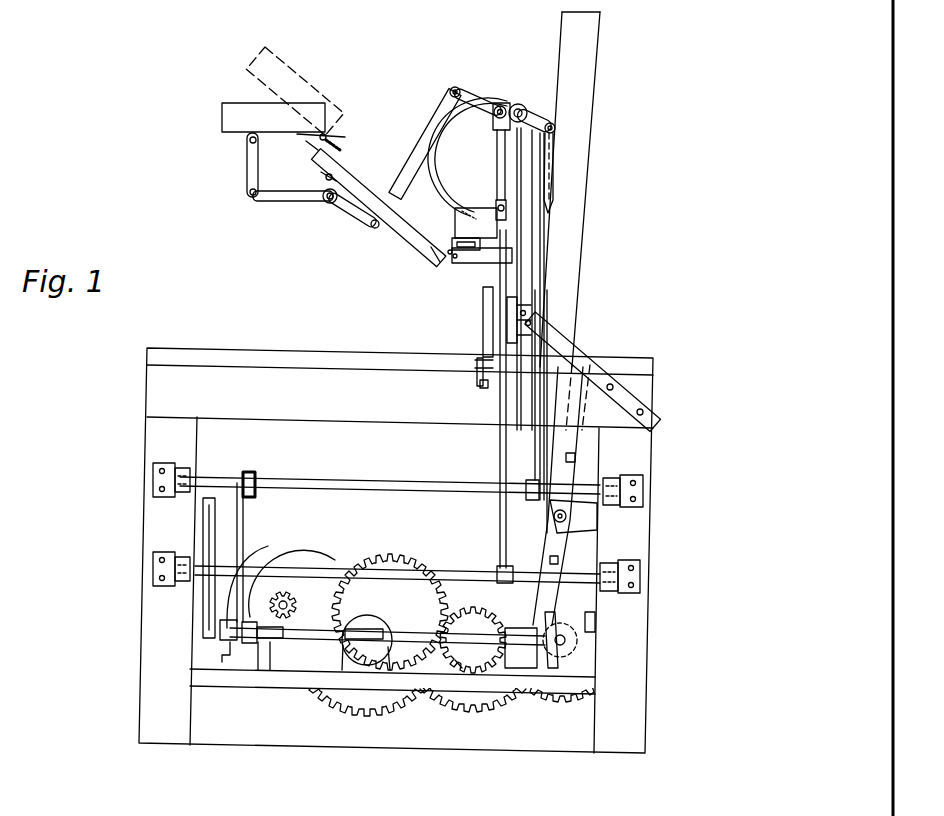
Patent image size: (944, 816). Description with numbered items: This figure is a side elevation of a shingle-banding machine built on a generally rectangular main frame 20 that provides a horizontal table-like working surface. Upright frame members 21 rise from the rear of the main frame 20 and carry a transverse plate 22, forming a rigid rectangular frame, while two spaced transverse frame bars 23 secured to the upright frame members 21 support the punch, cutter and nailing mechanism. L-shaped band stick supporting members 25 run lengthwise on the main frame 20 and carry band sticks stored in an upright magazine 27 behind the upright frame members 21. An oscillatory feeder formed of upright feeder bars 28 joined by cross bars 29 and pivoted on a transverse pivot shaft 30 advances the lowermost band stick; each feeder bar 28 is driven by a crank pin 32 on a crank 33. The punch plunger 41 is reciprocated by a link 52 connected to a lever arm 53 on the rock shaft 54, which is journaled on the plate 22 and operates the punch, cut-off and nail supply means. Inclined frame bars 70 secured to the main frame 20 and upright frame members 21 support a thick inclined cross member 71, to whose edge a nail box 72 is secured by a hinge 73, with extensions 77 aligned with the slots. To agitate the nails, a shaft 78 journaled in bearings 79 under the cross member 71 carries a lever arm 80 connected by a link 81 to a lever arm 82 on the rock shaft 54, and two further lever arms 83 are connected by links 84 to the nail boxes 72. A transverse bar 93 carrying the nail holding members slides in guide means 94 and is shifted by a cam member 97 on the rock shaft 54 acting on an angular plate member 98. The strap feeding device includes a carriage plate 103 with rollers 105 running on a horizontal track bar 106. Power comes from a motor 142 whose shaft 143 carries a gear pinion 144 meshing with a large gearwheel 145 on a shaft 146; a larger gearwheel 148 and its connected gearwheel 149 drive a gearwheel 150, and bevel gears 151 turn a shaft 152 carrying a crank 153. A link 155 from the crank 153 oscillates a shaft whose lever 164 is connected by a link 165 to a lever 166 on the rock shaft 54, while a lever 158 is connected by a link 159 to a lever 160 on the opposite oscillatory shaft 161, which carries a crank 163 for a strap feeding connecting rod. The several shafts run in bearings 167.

The main frame 20 is at (153, 408).
The upright frame members 21 is at (528, 180).
The plate 22 is at (500, 132).
The transverse frame bars 23 is at (513, 343).
The band stick supporting members 25 is at (157, 349).
The magazine 27 is at (587, 53).
The feeder bars 28 is at (570, 473).
The cross bars 29 is at (575, 457).
The pivot shaft 30 is at (560, 516).
The crank pin 32 is at (512, 660).
The crank 33 is at (566, 640).
The punch plunger 41 is at (503, 265).
The link 52 is at (498, 165).
The lever arm 53 is at (502, 104).
The rock shaft 54 is at (522, 105).
The inclined frame bars 70 is at (358, 170).
The inclined cross member 71 is at (410, 236).
The nail box 72 is at (233, 104).
The hinge 73 is at (313, 143).
The extensions 77 is at (332, 130).
The shaft 78 is at (326, 203).
The bearings 79 is at (325, 177).
The lever arm 80 is at (352, 213).
The link 81 is at (420, 144).
The lever arm 82 is at (472, 88).
The lever arms 83 is at (283, 199).
The links 84 is at (250, 167).
The transverse bar 93 is at (465, 253).
The guide means 94 is at (495, 257).
The cam member 97 is at (443, 194).
The plate member 98 is at (462, 217).
The carriage plate 103 is at (493, 388).
The rollers 105 is at (477, 363).
The track bar 106 is at (481, 387).
The motor 142 is at (295, 545).
The shaft 143 is at (287, 590).
The gear pinion 144 is at (290, 578).
The gearwheel 145 is at (377, 558).
The shaft 146 is at (367, 628).
The gearwheel 148 is at (470, 707).
The gearwheel 149 is at (458, 664).
The gearwheel 150 is at (565, 703).
The bevel gears 151 is at (596, 617).
The shaft 152 is at (409, 637).
The crank 153 is at (200, 640).
The link 155 is at (243, 517).
The lever 158 is at (217, 510).
The link 159 is at (200, 593).
The lever 160 is at (200, 607).
The oscillatory shaft 161 is at (447, 573).
The crank 163 is at (503, 515).
The lever 164 is at (528, 484).
The link 165 is at (543, 443).
The lever 166 is at (543, 118).
The bearings 167 is at (173, 498).